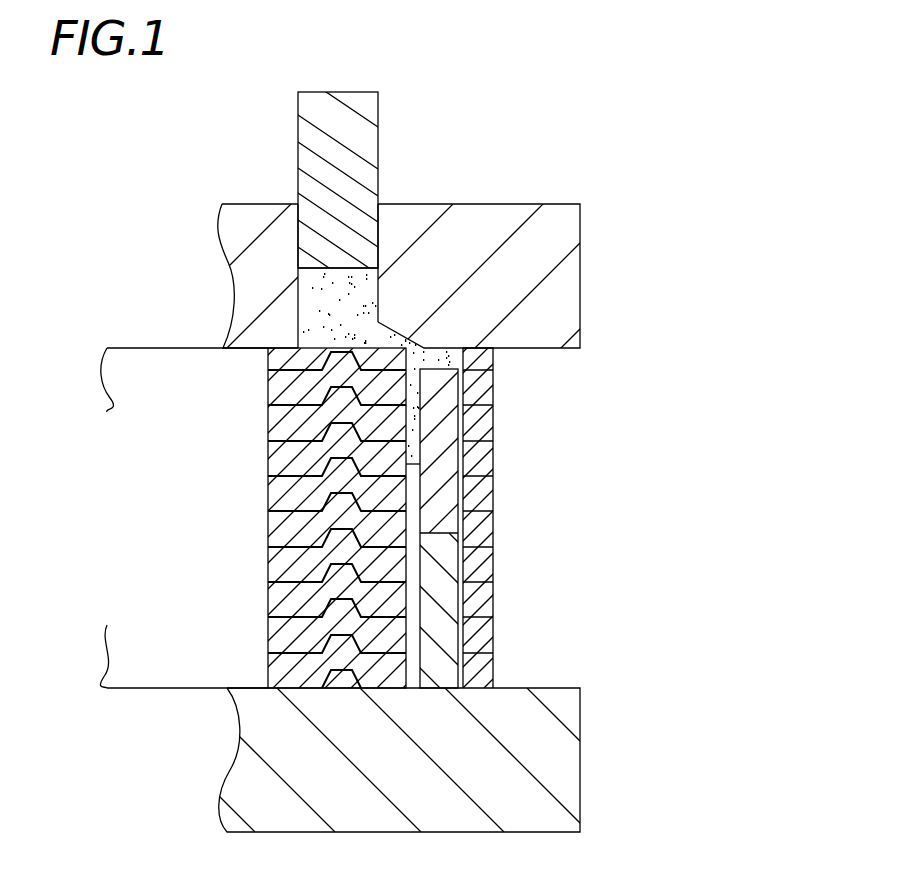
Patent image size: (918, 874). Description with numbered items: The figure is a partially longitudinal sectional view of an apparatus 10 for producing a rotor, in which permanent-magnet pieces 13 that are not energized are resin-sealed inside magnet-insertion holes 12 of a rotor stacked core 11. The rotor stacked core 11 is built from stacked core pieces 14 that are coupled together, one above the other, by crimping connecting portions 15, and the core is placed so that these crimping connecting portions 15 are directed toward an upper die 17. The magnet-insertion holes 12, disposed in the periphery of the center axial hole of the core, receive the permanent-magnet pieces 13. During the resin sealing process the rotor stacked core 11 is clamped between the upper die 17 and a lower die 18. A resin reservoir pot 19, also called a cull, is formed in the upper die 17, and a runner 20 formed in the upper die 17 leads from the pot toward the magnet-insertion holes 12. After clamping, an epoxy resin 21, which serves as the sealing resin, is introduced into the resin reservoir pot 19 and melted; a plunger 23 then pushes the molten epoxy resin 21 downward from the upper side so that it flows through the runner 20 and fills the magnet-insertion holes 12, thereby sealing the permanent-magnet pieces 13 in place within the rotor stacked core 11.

The apparatus for producing a rotor 10 is at (536, 137).
The rotor stacked core 11 is at (495, 506).
The magnet-insertion hole 12 is at (414, 594).
The permanent-magnet piece 13 is at (447, 445).
The core piece 14 is at (494, 408).
The crimping connecting portion 15 is at (333, 348).
The upper die 17 is at (557, 250).
The lower die 18 is at (556, 772).
The resin reservoir pot 19 is at (302, 255).
The runner 20 is at (394, 332).
The epoxy resin 21 is at (308, 293).
The plunger 23 is at (352, 107).